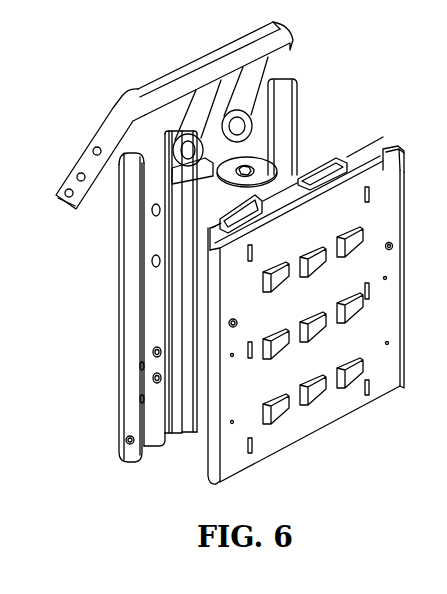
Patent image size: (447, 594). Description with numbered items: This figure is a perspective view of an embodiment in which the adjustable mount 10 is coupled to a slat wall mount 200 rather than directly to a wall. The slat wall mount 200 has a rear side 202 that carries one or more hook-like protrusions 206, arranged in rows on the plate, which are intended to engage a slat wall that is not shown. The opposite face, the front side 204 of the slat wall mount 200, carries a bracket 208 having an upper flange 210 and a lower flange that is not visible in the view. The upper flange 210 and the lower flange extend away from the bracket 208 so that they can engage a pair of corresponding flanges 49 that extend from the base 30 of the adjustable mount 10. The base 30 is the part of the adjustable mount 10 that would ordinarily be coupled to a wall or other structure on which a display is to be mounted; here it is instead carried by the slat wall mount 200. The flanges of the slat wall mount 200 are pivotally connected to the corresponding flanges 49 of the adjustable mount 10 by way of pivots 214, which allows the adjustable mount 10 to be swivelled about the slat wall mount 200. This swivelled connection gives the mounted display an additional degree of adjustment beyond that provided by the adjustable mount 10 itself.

The adjustable mount 10 is at (85, 434).
The base 30 is at (161, 440).
The flanges 49 is at (256, 163).
The slat wall mount 200 is at (223, 293).
The rear side 202 is at (381, 377).
The front side 204 is at (367, 154).
The hook-like protrusions 206 is at (314, 266).
The bracket 208 is at (316, 162).
The upper flange 210 is at (222, 197).
The pivots 214 is at (276, 153).